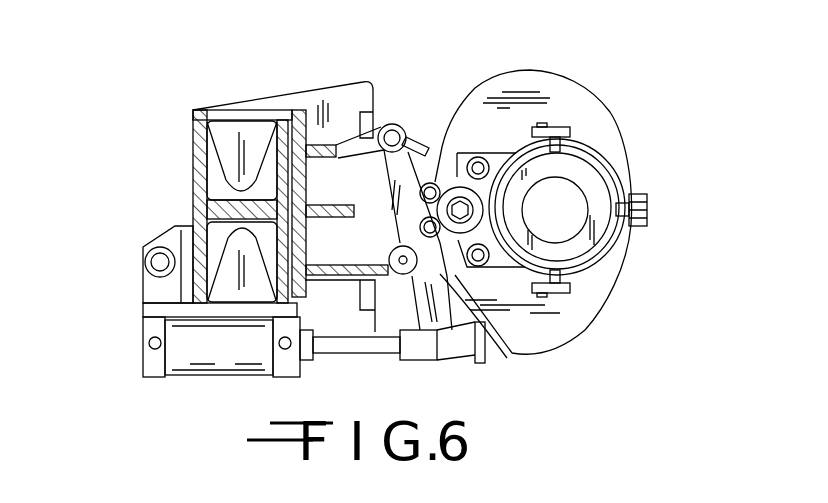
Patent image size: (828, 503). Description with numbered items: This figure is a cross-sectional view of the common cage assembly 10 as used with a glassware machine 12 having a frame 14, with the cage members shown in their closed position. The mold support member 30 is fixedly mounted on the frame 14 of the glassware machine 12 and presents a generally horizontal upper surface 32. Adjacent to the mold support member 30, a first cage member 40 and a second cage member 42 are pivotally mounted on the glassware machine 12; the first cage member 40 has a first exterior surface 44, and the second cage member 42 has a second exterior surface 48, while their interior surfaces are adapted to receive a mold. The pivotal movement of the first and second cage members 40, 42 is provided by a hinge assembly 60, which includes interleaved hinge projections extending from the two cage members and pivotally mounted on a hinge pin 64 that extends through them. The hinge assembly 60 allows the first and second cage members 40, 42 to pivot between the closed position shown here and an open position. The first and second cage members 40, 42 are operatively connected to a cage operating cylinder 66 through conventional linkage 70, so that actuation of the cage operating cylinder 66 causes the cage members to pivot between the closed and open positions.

The common cage assembly 10 is at (690, 85).
The glassware machine 12 is at (193, 128).
The frame 14 is at (192, 183).
The mold support member 30 is at (529, 68).
The upper surface 32 is at (573, 100).
The first cage member 40 is at (598, 273).
The second cage member 42 is at (624, 158).
The first exterior surface 44 is at (632, 257).
The second exterior surface 48 is at (632, 167).
The hinge assembly 60 is at (450, 193).
The hinge pin 64 is at (460, 207).
The cage operating cylinder 66 is at (147, 372).
The linkage 70 is at (511, 360).